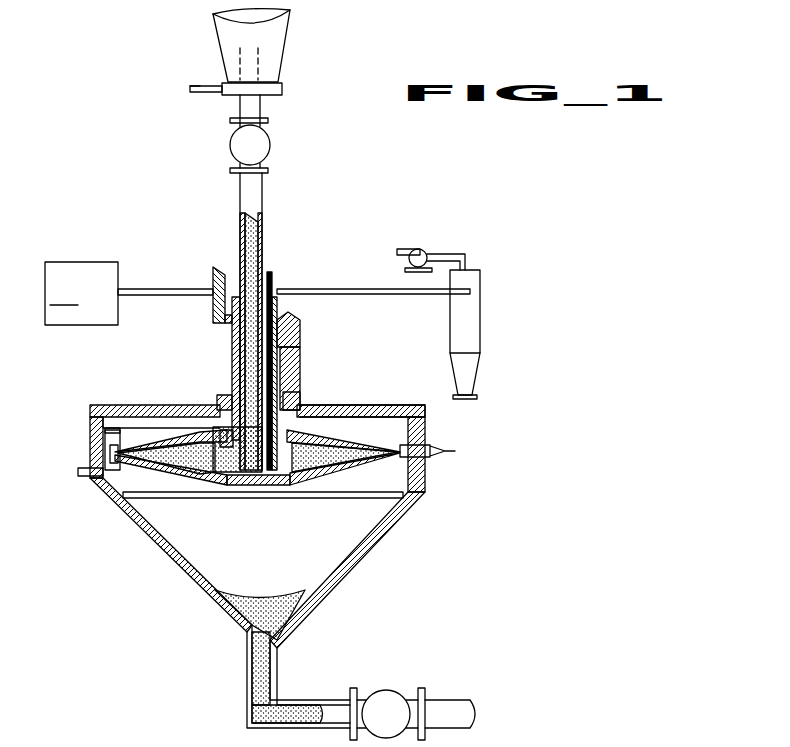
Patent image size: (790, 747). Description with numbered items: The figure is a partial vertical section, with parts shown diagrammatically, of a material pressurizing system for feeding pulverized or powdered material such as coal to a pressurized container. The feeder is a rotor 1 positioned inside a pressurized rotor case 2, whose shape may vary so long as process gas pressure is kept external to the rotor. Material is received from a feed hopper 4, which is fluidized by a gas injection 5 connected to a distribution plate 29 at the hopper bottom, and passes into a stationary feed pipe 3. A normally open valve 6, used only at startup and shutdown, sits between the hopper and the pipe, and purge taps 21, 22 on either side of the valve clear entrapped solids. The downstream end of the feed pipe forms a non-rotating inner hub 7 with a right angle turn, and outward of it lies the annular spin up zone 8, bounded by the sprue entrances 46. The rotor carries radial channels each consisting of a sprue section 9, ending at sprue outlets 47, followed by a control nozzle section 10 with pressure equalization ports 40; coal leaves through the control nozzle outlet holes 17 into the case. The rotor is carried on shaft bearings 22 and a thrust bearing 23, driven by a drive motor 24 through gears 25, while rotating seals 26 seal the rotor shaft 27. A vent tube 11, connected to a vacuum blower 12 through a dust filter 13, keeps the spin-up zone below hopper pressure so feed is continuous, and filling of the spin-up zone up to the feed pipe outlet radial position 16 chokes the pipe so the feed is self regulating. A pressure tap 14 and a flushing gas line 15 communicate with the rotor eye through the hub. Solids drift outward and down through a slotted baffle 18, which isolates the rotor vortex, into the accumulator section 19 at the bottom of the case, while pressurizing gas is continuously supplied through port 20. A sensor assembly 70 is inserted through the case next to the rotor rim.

The rotor 1 is at (365, 405).
The pressurized rotor case 2 is at (415, 405).
The stationary feed pipe 3 is at (263, 213).
The feed hopper 4 is at (292, 28).
The gas injection 5 is at (190, 87).
The normally open valve 6 is at (230, 146).
The inner hub 7 is at (296, 485).
The spin up zone 8 is at (300, 412).
The sprue section 9 is at (320, 417).
The control nozzle section 10 is at (105, 440).
The vent tube 11 is at (325, 289).
The vacuum blower 12 is at (425, 250).
The dust filter 13 is at (482, 320).
The pressure tap 14 is at (279, 272).
The flushing gas line 15 is at (265, 275).
The feed pipe outlet radial position 16 is at (235, 498).
The control nozzle outlet holes 17 is at (432, 448).
The slotted baffle 18 is at (270, 488).
The accumulator section 19 is at (282, 578).
The port 20 is at (80, 476).
The purge tap 21 is at (232, 172).
The purge tap / shaft bearings 22 is at (232, 120).
The thrust bearing 23 is at (300, 352).
The drive motor 24 is at (129, 293).
The gears 25 is at (213, 270).
The rotating seals 26 is at (220, 405).
The rotor shaft 27 is at (300, 335).
The distribution plate 29 is at (283, 88).
The pressure equalization ports 40 is at (425, 497).
The sprue entrances 46 is at (212, 472).
The sprue outlets 47 is at (148, 470).
The sensor assembly 70 is at (120, 428).